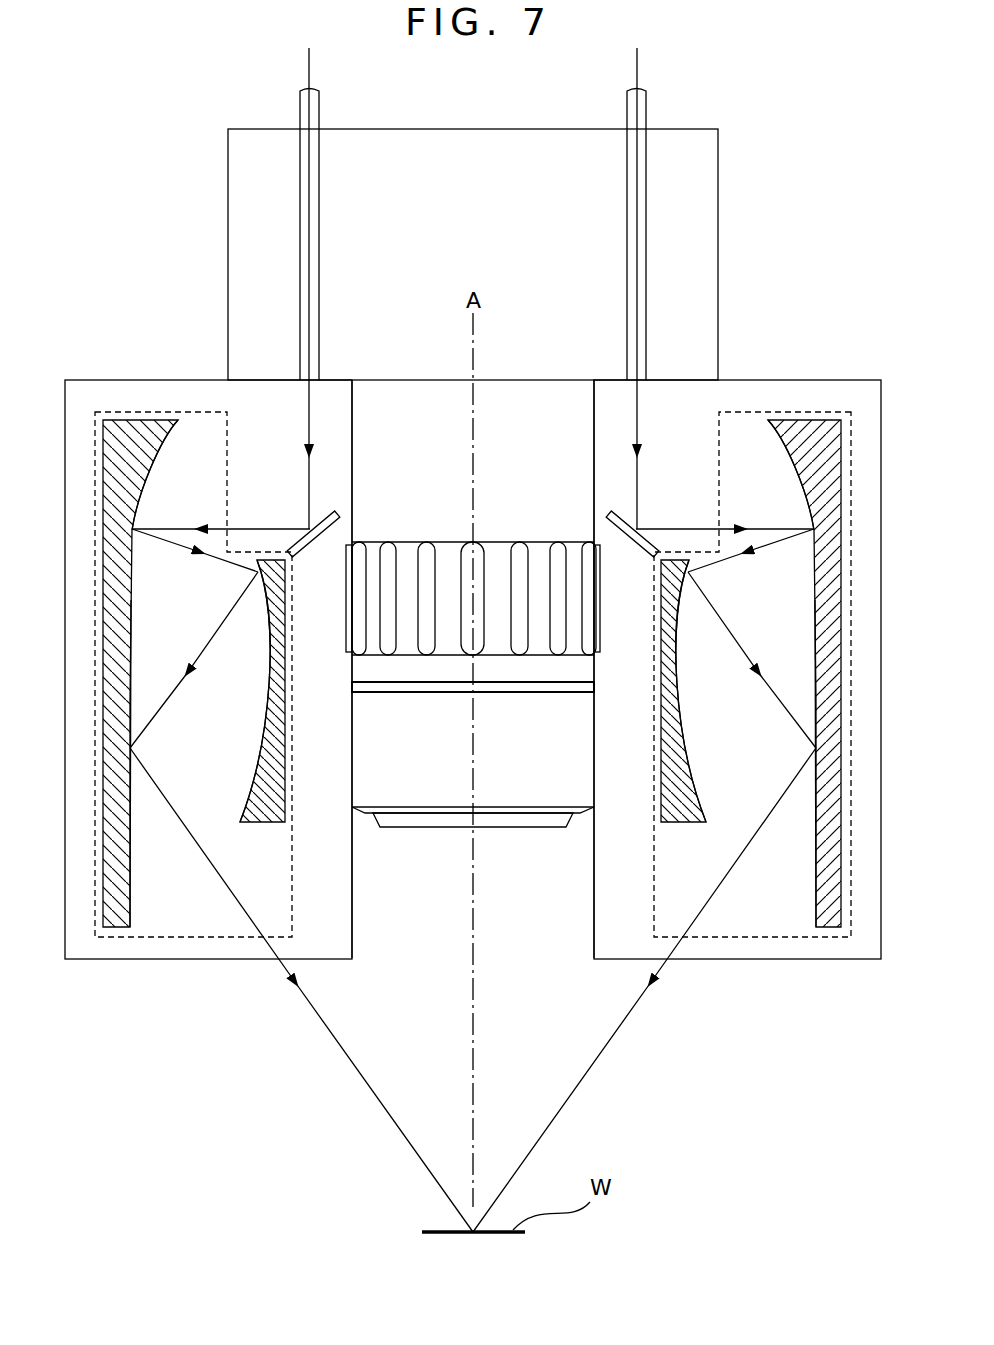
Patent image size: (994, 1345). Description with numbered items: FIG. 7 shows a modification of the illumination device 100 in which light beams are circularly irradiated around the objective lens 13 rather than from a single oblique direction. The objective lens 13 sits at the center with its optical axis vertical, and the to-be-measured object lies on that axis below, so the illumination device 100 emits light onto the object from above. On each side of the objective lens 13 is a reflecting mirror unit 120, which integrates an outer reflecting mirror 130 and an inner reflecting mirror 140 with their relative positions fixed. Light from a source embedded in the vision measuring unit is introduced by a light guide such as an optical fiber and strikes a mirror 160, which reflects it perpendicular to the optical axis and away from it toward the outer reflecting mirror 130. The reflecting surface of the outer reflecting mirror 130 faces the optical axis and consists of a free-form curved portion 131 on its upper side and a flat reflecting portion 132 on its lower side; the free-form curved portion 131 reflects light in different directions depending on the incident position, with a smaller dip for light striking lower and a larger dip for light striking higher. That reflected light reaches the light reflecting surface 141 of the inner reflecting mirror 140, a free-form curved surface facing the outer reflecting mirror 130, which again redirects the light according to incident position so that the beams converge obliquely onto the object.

The objective lens 13 is at (425, 795).
The illumination device 100 is at (782, 323).
The reflecting mirror unit 120 is at (137, 412).
The outer reflecting mirror 130 is at (132, 600).
The free-form curved portion 131 is at (163, 458).
The flat reflecting portion 132 is at (132, 878).
The inner reflecting mirror 140 is at (268, 822).
The light reflecting surface 141 is at (247, 797).
The mirror 160 is at (325, 508).